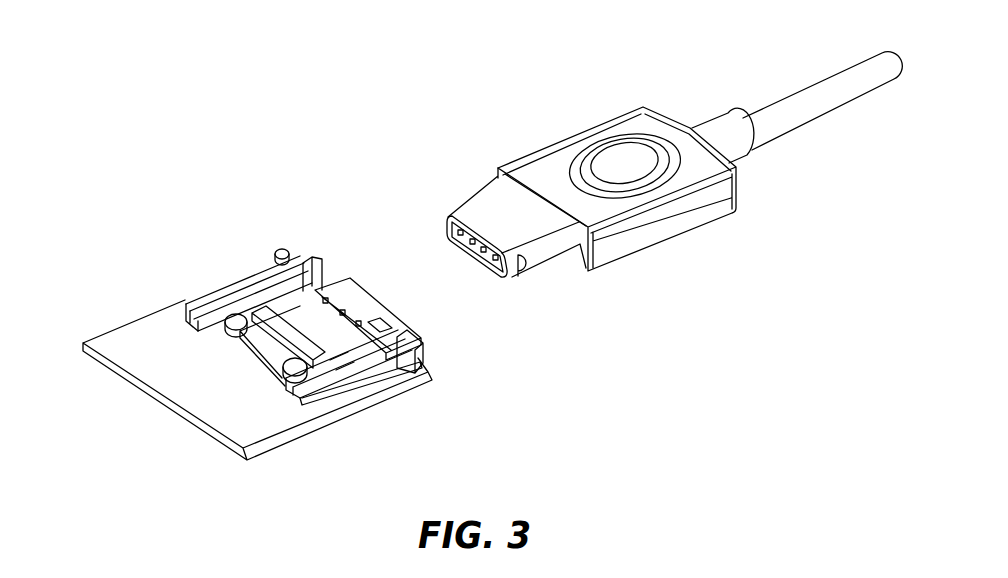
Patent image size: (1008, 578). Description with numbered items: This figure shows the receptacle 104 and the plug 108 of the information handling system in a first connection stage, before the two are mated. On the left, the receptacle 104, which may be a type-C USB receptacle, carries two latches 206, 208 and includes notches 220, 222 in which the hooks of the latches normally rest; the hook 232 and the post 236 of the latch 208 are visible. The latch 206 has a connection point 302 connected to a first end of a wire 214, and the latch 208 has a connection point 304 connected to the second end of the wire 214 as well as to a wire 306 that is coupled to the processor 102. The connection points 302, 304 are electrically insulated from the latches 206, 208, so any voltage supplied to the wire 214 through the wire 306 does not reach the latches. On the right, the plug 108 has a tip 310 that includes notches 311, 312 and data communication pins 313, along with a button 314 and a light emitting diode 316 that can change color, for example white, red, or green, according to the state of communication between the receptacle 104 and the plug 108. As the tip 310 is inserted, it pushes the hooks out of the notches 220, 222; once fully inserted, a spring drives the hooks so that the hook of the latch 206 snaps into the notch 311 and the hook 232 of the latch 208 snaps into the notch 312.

The processor 102 is at (325, 402).
The receptacle 104 is at (335, 297).
The plug 108 is at (641, 186).
The latch 206 is at (222, 290).
The latch 208 is at (350, 366).
The wire 214 is at (228, 337).
The notch 220 is at (320, 290).
The notch 222 is at (374, 323).
The hook 232 is at (428, 347).
The post 236 is at (431, 373).
The connection point 302 is at (192, 298).
The connection point 304 is at (310, 385).
The wire 306 is at (270, 433).
The tip 310 is at (483, 236).
The notch 311 is at (448, 206).
The notch 312 is at (526, 278).
The data communication pins 313 is at (473, 256).
The button 314 is at (622, 153).
The light emitting diode (LED) 316 is at (681, 174).